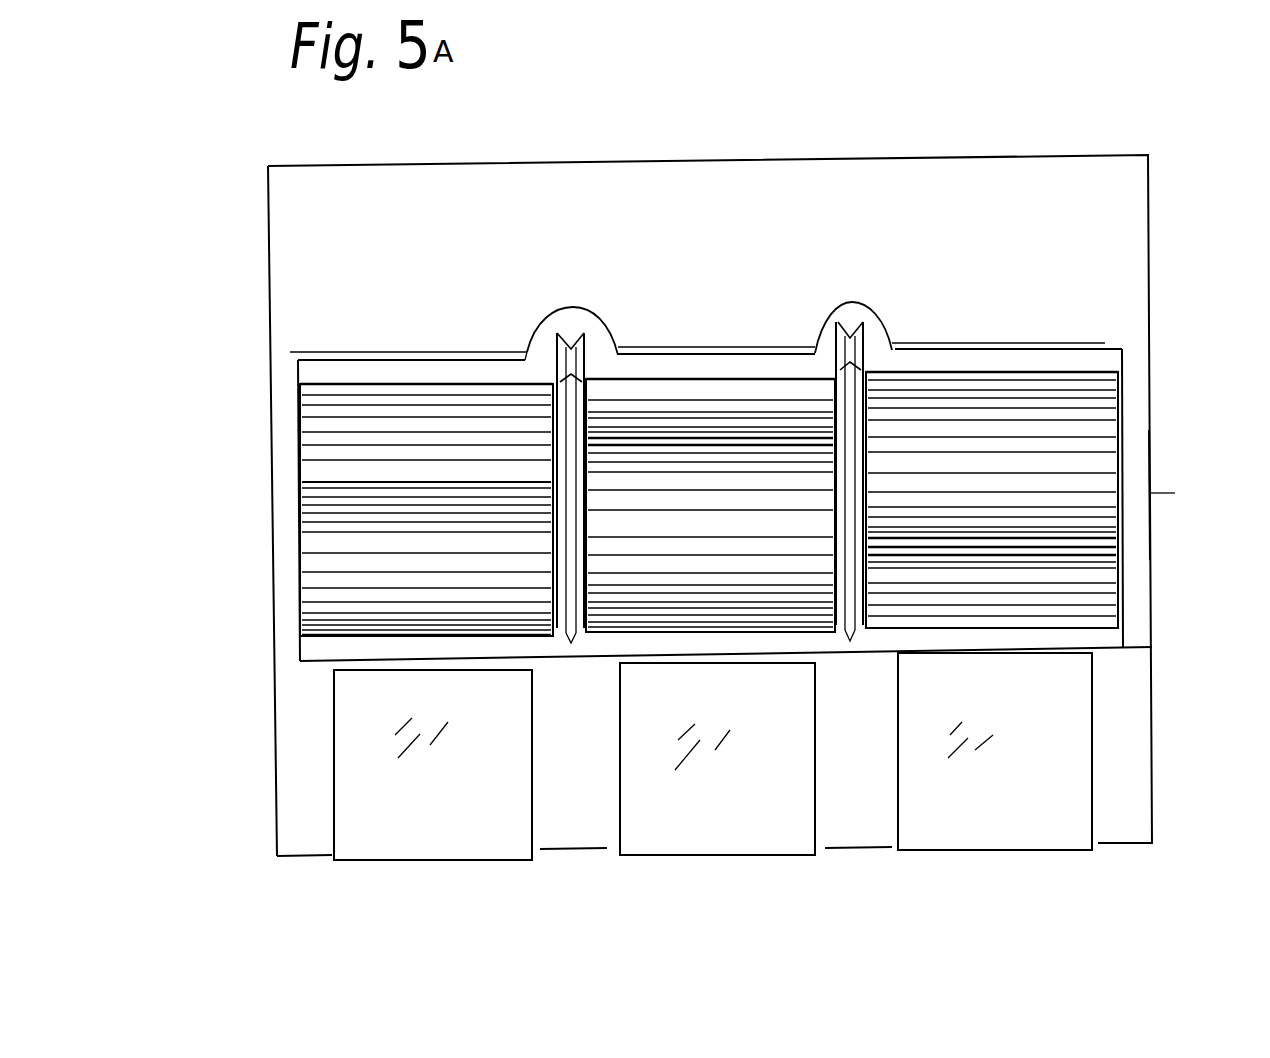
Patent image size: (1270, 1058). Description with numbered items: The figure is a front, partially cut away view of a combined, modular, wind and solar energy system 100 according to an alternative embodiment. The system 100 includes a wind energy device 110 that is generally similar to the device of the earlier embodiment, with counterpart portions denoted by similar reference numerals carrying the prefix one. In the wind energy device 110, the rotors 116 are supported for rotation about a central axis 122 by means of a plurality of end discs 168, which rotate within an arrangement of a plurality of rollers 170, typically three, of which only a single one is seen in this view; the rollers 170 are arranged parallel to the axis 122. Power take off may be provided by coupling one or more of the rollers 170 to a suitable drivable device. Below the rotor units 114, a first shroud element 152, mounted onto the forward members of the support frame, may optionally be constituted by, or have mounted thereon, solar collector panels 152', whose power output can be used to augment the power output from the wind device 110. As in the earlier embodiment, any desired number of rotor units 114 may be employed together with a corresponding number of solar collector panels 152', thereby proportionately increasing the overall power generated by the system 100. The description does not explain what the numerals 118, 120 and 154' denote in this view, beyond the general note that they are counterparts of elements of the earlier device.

The combined, modular, wind and solar energy system 100 is at (722, 130).
The wind energy device 110 is at (252, 589).
The rotor unit 114 is at (357, 368).
The rotor 116 is at (392, 613).
The laminated layer 118 is at (320, 462).
The intermediate layer 120 is at (330, 518).
The central axis 122 is at (1164, 494).
The first shroud element 152 is at (713, 862).
The solar collector panel 152' is at (692, 780).
The gap 154' is at (448, 236).
The end disc 168 is at (571, 643).
The roller 170 is at (557, 333).